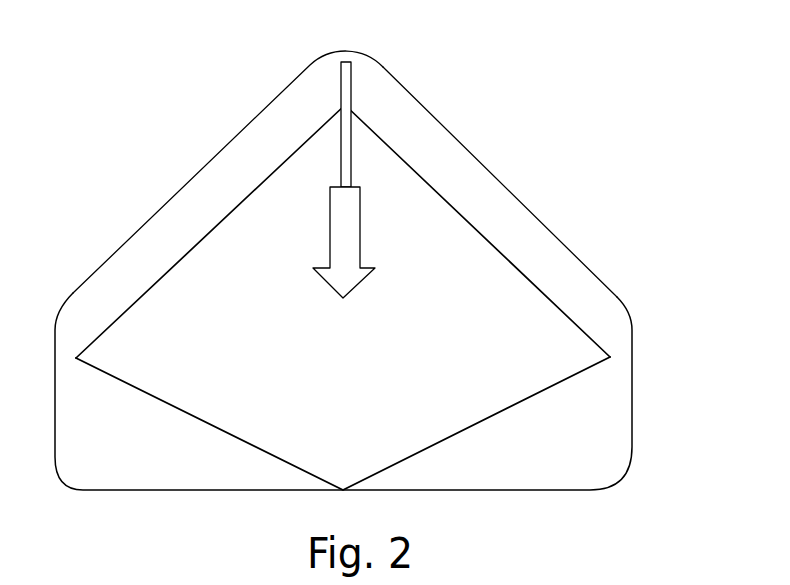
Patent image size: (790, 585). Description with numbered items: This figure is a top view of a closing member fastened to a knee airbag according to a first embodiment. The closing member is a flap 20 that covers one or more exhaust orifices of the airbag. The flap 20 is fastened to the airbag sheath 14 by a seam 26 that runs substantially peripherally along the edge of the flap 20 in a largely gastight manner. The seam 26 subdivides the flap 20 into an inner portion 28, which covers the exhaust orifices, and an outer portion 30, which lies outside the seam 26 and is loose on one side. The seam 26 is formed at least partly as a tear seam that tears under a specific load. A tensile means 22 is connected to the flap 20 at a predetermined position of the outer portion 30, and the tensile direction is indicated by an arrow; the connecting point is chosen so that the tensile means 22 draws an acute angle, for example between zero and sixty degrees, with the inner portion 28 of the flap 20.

The airbag sheath 14 is at (95, 213).
The flap 20 is at (170, 98).
The tensile means 22 is at (348, 82).
The seam 26 is at (468, 223).
The inner portion 28 is at (448, 148).
The outer portion 30 is at (542, 330).